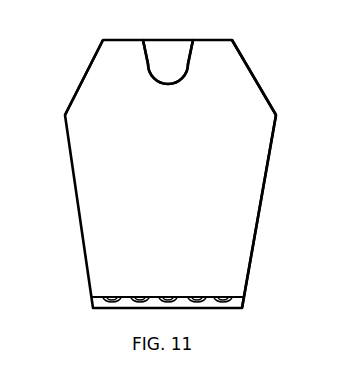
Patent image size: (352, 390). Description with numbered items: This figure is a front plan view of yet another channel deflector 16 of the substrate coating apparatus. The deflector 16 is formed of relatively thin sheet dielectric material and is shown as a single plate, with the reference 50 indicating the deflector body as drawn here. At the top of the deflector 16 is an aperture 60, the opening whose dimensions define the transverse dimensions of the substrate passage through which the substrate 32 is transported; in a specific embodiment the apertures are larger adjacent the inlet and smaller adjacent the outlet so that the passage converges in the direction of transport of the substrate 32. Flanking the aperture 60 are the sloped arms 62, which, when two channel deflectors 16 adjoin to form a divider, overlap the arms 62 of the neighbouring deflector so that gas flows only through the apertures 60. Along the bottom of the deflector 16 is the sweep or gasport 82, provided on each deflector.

The deflector 16 is at (230, 217).
The substrate 32 is at (168, 22).
The container body 50 is at (105, 220).
The aperture 60 is at (168, 52).
The arm 62 is at (113, 55).
The sweep or gasport 82 is at (197, 308).